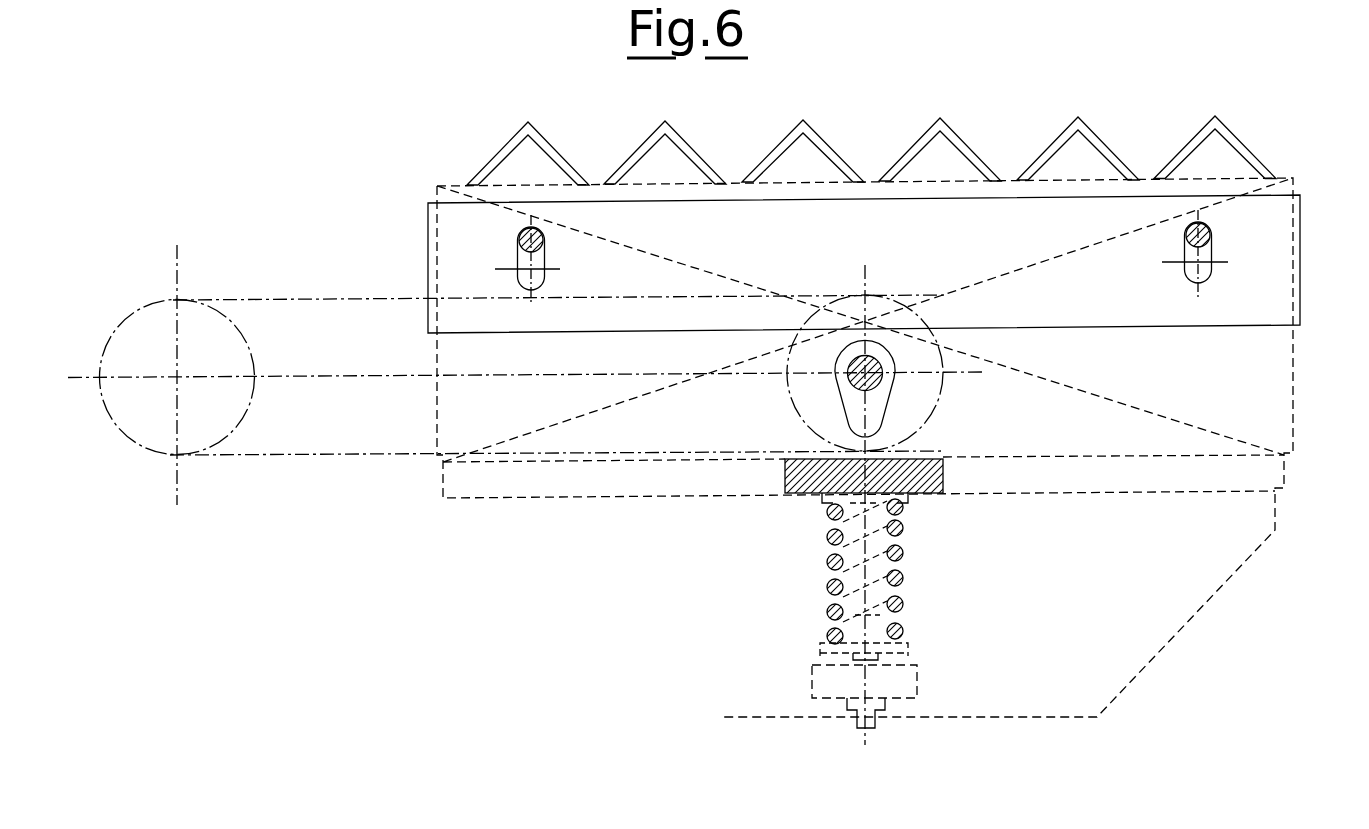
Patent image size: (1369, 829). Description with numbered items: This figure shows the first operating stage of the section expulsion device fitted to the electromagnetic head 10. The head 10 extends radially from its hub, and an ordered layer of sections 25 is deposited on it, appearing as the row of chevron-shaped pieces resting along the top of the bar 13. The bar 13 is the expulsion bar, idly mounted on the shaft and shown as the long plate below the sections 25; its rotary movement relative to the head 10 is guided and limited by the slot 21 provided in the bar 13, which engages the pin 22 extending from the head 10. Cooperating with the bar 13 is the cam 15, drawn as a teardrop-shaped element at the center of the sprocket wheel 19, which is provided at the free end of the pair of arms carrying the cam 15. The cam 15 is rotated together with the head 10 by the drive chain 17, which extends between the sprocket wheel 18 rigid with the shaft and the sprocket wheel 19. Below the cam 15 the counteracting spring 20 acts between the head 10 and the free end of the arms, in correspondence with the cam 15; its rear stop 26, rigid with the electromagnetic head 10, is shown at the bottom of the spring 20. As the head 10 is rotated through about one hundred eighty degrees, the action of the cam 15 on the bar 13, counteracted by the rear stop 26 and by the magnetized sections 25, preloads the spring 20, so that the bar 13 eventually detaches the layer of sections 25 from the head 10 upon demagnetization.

The electromagnetic head 10 is at (1287, 371).
The bar 13 is at (831, 215).
The cam 15 is at (870, 404).
The drive chain 17 is at (372, 457).
The sprocket wheel 18 is at (122, 422).
The sprocket wheel 19 is at (808, 413).
The counteracting spring 20 is at (826, 562).
The slot 21 is at (1205, 271).
The pin 22 is at (1212, 236).
The sections 25 is at (1123, 143).
The rear stop 26 is at (812, 681).